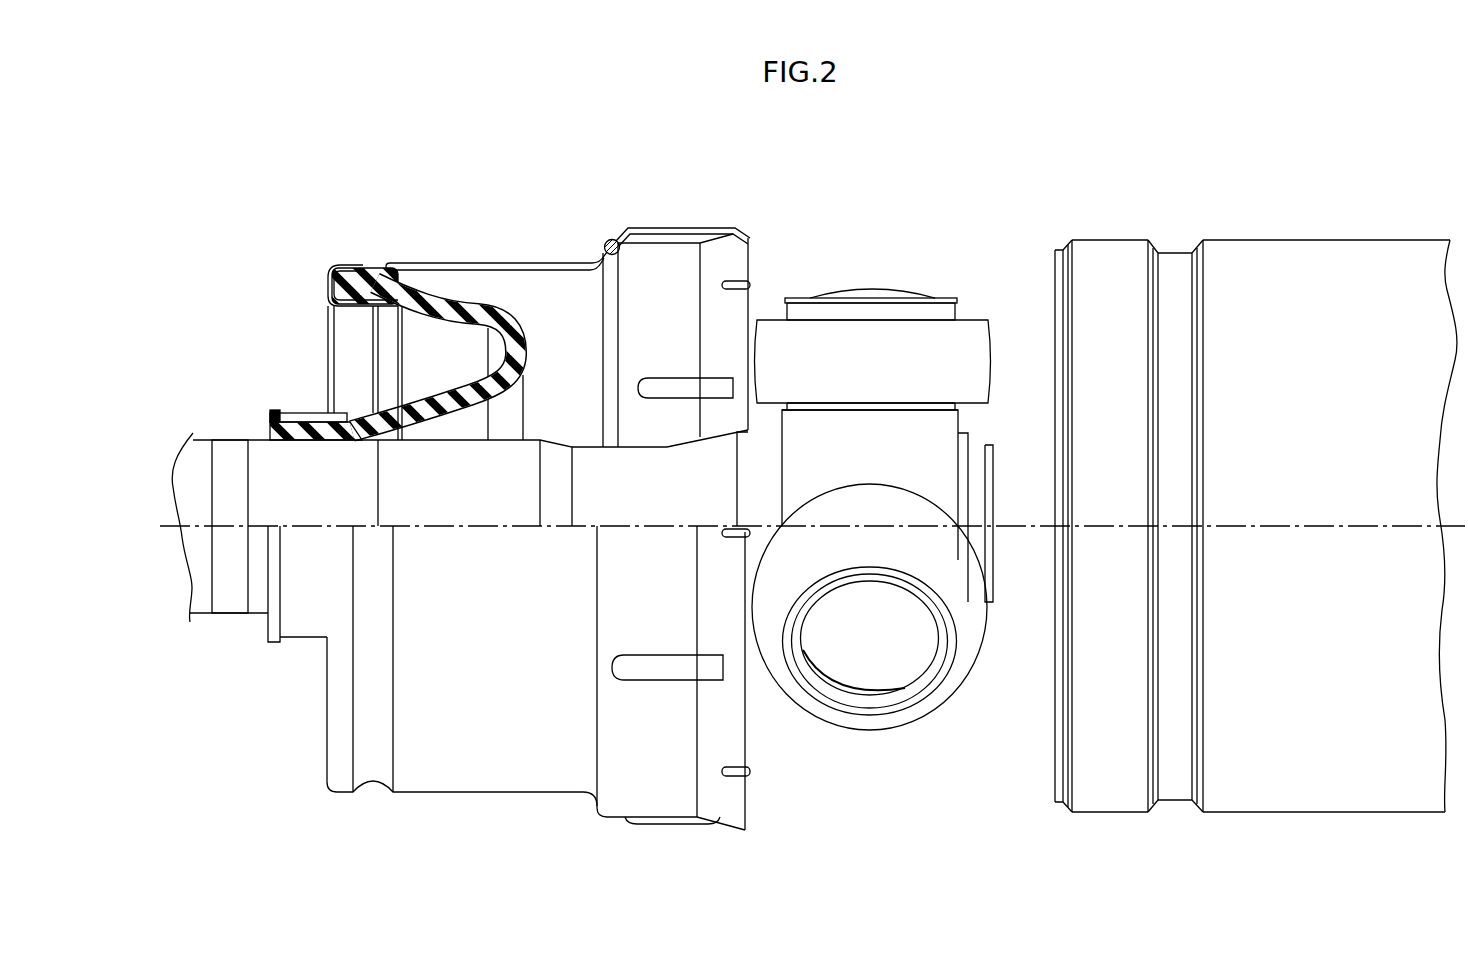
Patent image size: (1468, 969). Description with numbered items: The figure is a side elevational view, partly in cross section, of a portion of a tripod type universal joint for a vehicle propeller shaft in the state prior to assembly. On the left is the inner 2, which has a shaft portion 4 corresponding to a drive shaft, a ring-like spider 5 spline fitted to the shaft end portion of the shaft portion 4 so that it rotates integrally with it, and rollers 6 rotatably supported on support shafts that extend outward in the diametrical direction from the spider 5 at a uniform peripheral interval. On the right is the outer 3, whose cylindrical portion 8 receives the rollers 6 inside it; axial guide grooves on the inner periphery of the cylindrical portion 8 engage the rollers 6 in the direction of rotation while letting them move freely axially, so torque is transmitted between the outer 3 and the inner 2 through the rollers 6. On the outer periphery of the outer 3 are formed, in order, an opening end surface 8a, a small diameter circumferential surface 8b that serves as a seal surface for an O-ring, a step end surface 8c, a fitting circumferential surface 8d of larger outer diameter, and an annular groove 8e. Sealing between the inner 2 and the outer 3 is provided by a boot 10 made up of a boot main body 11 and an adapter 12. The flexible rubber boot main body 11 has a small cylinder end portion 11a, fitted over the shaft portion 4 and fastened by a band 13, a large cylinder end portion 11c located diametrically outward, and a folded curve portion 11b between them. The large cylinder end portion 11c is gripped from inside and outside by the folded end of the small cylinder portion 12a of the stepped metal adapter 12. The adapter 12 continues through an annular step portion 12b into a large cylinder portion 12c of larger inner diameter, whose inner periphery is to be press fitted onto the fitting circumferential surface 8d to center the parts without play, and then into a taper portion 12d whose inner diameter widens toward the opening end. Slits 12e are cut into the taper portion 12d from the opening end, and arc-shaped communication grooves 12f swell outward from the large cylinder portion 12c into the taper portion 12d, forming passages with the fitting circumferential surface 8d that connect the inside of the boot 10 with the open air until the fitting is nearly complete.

The inner 2 is at (889, 455).
The outer 3 is at (1222, 476).
The shaft portion 4 is at (190, 455).
The spider 5 is at (948, 430).
The roller 6 is at (975, 340).
The cylindrical portion 8 is at (1222, 510).
The opening end surface 8a is at (1053, 762).
The small diameter circumferential surface 8b is at (1060, 808).
The step end surface 8c is at (1065, 250).
The fitting circumferential surface 8d is at (1163, 250).
The annular groove 8e is at (1200, 250).
The boot 10 is at (368, 222).
The boot main body 11 is at (394, 313).
The small cylinder end portion 11a is at (290, 433).
The curve portion 11b is at (527, 345).
The large cylinder end portion 11c is at (348, 265).
The adapter 12 is at (547, 491).
The small cylinder portion 12a is at (505, 263).
The annular step portion 12b is at (608, 246).
The large cylinder portion 12c is at (620, 230).
The taper portion 12d is at (745, 232).
The slit 12e is at (735, 285).
The communication groove 12f is at (670, 230).
The band 13 is at (300, 415).